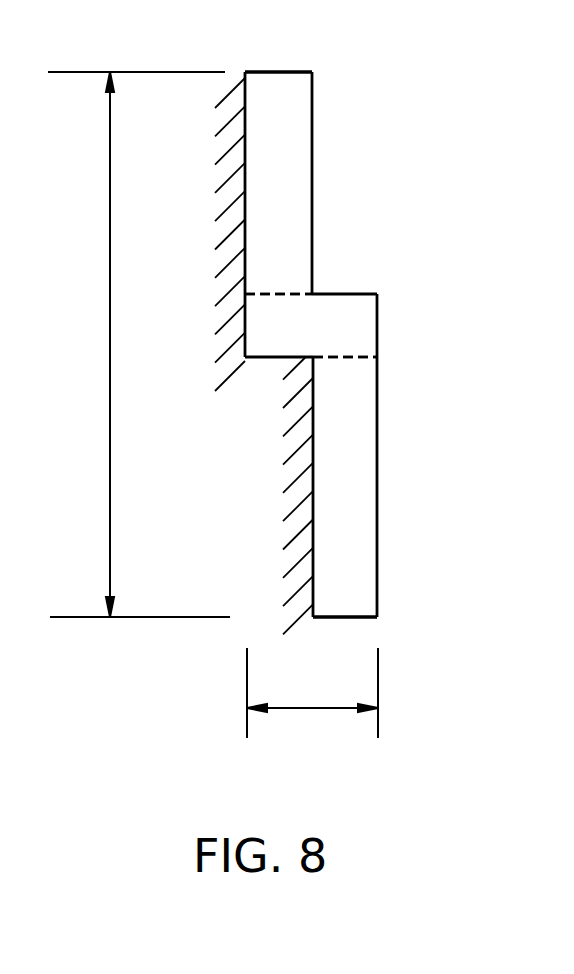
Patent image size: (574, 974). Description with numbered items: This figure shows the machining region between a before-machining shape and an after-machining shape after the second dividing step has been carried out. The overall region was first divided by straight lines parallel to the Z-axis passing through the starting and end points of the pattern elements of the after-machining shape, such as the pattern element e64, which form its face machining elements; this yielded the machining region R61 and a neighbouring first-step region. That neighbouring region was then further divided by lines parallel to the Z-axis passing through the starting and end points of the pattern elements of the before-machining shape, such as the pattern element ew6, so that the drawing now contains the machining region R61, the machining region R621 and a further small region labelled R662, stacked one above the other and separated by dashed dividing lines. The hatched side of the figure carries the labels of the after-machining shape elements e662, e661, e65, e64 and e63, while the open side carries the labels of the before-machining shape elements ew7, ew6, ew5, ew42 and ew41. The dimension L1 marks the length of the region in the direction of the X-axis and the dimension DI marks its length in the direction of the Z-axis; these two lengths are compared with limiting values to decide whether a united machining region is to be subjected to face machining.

The top end wall of resistor element ew7 is at (278, 53).
The pattern element ew6 is at (345, 183).
The upper resistor region R662 is at (280, 183).
The upper inner edge (hatched) of resistor e662 is at (203, 161).
The lower inner edge (hatched) of resistor e661 is at (204, 305).
The step wall between upper and middle regions ew5 is at (345, 275).
The machining region R621 is at (311, 325).
The outer side wall of middle region ew42 is at (422, 325).
The step edge between middle and lower regions e65 is at (279, 375).
The pattern element e64 is at (279, 495).
The machining region R61 is at (345, 487).
The outer side wall of lower region ew41 is at (422, 487).
The bottom end wall of resistor element e63 is at (345, 633).
The length in the direction of the X-axis L1 is at (139, 344).
The length in the direction of the Z-axis DI is at (312, 693).